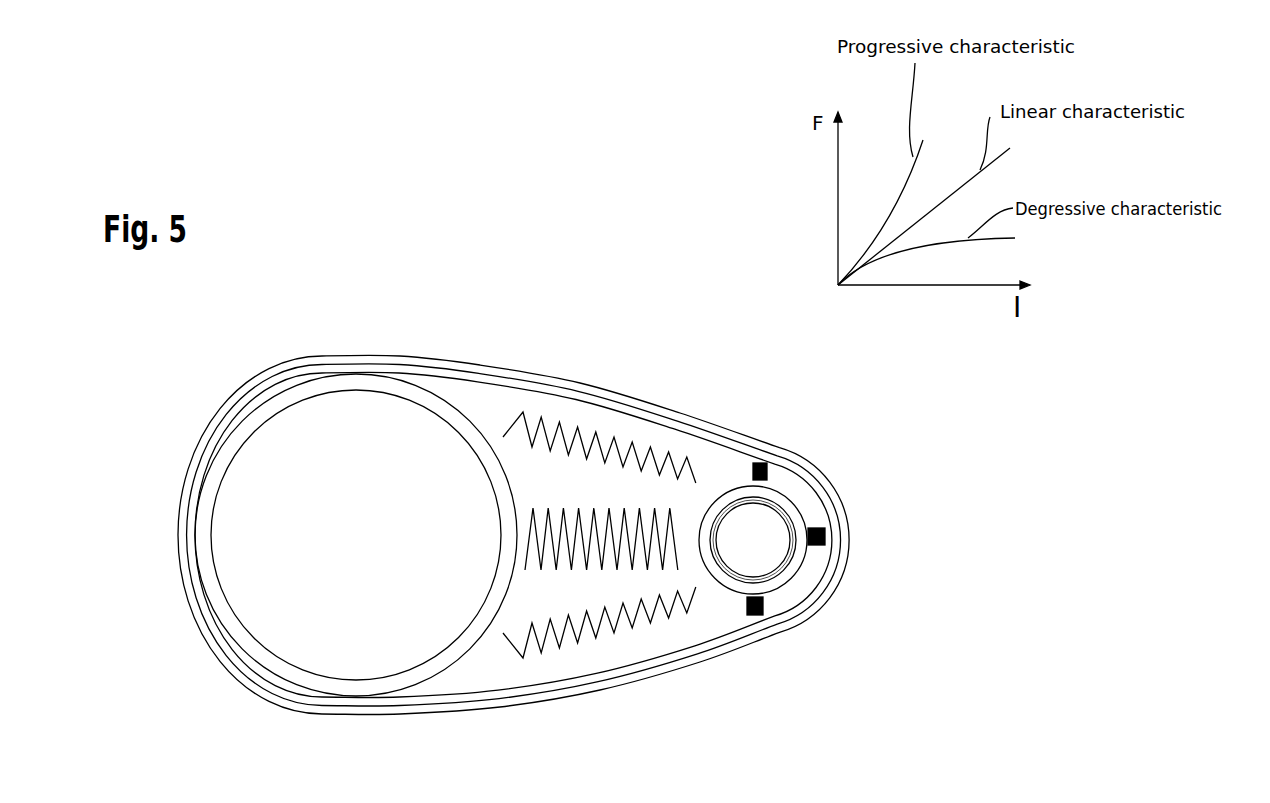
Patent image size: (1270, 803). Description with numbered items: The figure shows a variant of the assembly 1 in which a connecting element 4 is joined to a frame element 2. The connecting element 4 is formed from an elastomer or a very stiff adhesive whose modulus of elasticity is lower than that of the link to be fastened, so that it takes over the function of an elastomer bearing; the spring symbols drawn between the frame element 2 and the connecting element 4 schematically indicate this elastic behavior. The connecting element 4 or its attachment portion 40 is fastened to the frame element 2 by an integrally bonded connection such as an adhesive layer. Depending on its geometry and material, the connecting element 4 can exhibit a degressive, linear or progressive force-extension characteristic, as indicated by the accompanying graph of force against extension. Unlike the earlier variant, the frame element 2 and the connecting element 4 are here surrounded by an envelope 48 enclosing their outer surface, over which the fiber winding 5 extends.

The assembly 1 is at (975, 413).
The frame element 2 is at (353, 372).
The connecting element 4 is at (799, 447).
The fiber winding 5 is at (598, 378).
The attachment portion 40 is at (796, 491).
The envelope 48 is at (690, 423).